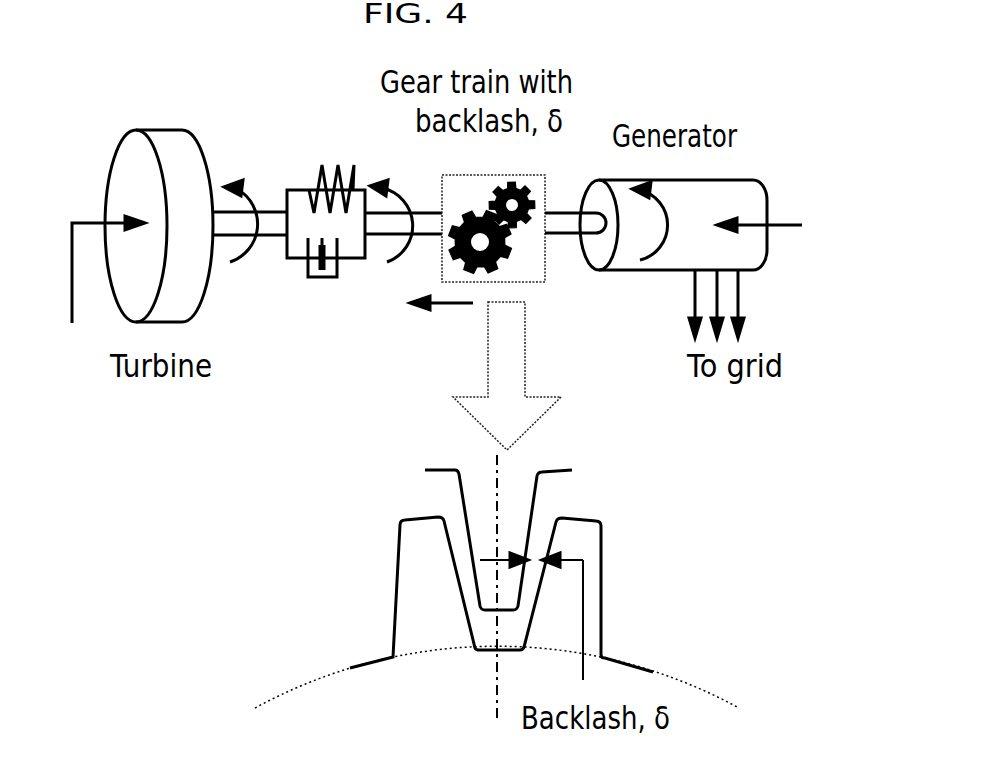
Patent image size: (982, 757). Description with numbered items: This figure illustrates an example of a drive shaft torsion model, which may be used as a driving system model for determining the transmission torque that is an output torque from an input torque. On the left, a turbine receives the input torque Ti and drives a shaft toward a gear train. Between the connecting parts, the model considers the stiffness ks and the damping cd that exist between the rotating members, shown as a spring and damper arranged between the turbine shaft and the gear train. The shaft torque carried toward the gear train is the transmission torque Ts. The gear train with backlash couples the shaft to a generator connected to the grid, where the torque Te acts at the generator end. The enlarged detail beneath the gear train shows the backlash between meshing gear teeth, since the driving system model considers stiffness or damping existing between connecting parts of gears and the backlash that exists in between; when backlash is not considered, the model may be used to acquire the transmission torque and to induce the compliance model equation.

The turbine input torque Ti is at (94, 299).
The shaft stiffness spring ks is at (331, 168).
The shaft damping cd is at (321, 283).
The shaft torque Ts is at (441, 325).
The electrical torque Te is at (771, 253).